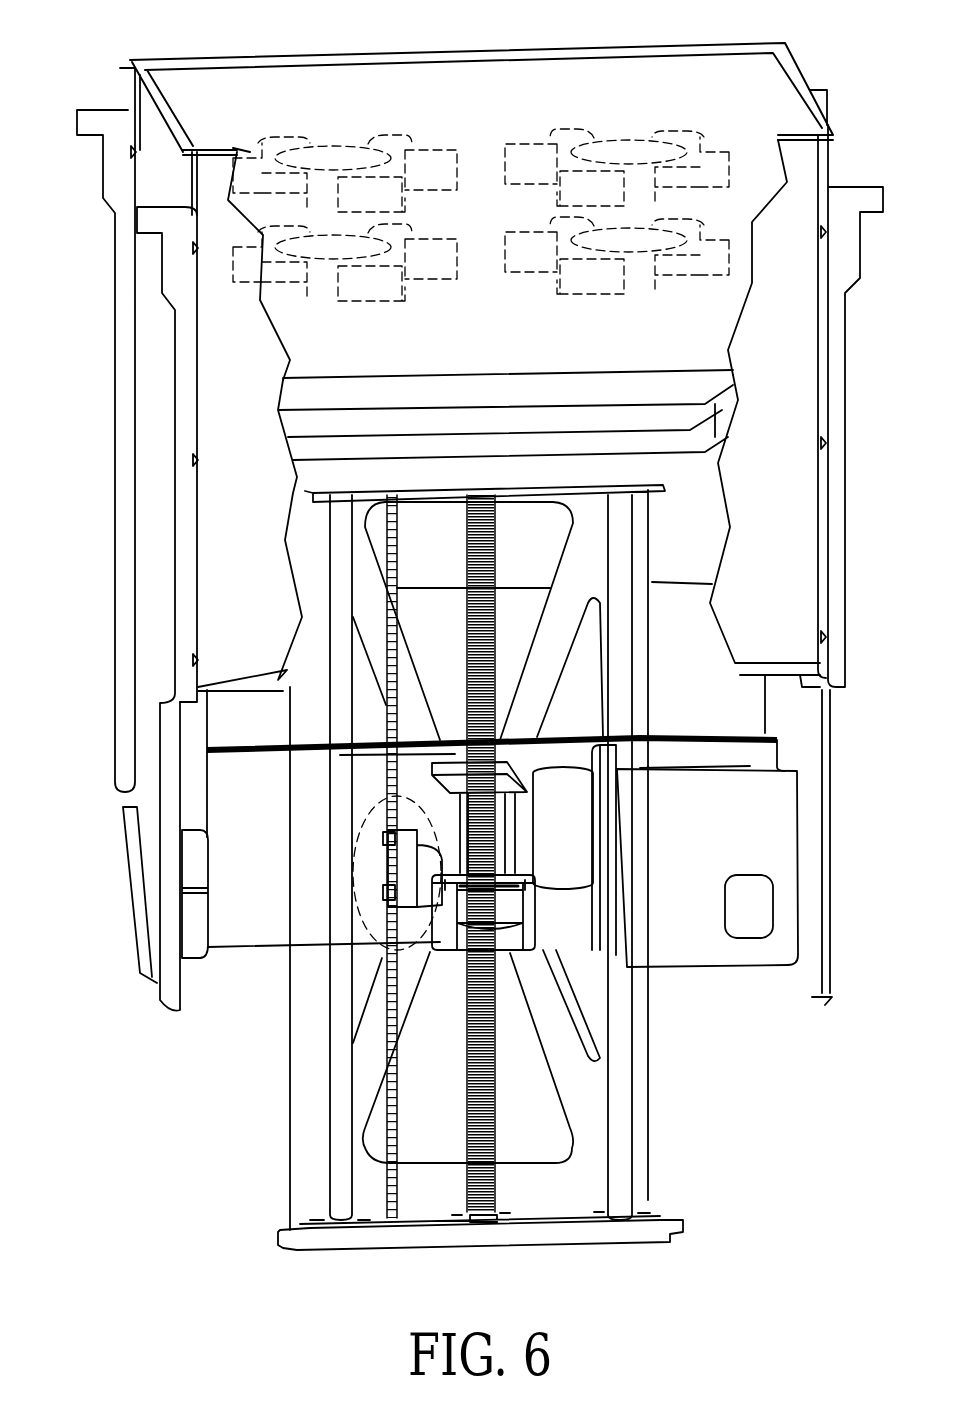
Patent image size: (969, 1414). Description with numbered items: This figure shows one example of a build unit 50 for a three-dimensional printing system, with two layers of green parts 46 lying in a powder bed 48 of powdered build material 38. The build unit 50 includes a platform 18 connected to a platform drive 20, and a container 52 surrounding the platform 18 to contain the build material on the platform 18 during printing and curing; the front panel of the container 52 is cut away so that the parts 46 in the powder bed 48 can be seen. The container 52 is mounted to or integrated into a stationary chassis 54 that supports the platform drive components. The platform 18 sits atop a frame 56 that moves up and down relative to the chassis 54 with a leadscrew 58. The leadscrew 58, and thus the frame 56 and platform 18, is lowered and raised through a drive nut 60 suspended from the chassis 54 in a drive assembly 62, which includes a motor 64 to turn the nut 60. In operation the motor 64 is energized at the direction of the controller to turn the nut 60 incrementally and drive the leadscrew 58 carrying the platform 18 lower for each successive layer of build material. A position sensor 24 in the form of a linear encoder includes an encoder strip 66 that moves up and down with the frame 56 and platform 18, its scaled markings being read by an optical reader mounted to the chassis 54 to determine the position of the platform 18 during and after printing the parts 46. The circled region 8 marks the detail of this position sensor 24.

The build unit 50 is at (122, 42).
The container 52 is at (132, 72).
The powdered build material 38 is at (611, 73).
The green parts 46 is at (235, 198).
The platform 18 is at (296, 401).
The powder bed 48 is at (497, 370).
The encoder strip 66 is at (393, 552).
The frame 56 is at (573, 570).
The leadscrew 58 is at (465, 1050).
The drive mechanism 8 is at (365, 810).
The position sensor 24 is at (368, 864).
The drive nut 60 is at (503, 915).
The motor 64 is at (577, 812).
The drive assembly 62 is at (593, 855).
The platform drive 20 is at (616, 920).
The chassis 54 is at (233, 930).